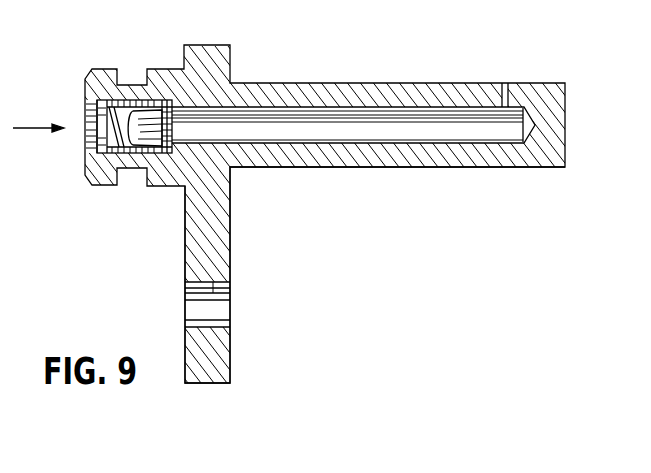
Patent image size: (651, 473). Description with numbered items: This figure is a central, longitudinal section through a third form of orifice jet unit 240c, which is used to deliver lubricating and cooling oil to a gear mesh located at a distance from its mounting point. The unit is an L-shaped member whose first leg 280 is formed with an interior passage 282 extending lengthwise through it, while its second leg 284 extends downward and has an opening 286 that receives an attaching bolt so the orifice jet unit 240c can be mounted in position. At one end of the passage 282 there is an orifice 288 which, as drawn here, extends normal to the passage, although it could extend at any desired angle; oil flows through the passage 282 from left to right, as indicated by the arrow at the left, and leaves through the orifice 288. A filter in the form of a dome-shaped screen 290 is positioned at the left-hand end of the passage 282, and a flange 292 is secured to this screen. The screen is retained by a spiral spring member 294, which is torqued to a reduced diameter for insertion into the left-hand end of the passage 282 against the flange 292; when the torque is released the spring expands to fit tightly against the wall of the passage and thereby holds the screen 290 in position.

The orifice jet unit 240c is at (510, 178).
The first leg 280 is at (333, 92).
The interior passage 282 is at (242, 128).
The second leg 284 is at (216, 232).
The opening 286 is at (213, 283).
The orifice 288 is at (500, 97).
The dome-shaped screen 290 is at (145, 130).
The flange 292 is at (167, 101).
The spiral spring member 294 is at (118, 104).